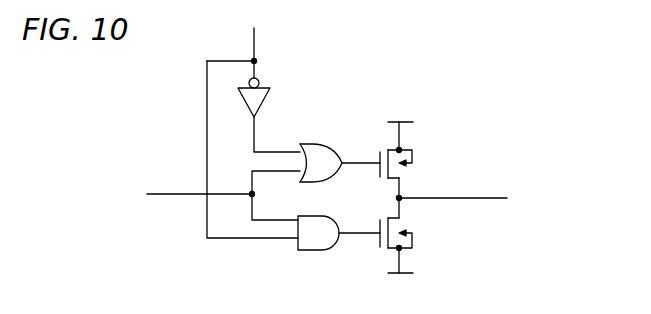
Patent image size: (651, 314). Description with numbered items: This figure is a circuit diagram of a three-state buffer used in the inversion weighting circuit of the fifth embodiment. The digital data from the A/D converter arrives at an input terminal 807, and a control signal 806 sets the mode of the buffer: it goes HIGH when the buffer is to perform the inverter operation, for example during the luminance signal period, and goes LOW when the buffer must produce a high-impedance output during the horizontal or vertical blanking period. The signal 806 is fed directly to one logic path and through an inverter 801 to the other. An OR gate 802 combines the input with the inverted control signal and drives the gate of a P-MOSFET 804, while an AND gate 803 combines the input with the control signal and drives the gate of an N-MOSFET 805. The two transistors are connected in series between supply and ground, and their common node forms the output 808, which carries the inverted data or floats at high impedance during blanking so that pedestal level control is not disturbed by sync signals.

The inverter 801 is at (265, 100).
The OR gate 802 is at (316, 146).
The AND gate 803 is at (322, 216).
The P-MOSFET 804 is at (414, 160).
The N-MOSFET 805 is at (414, 238).
The signal 806 is at (256, 61).
The input terminal 807 is at (176, 194).
The output 808 is at (488, 198).